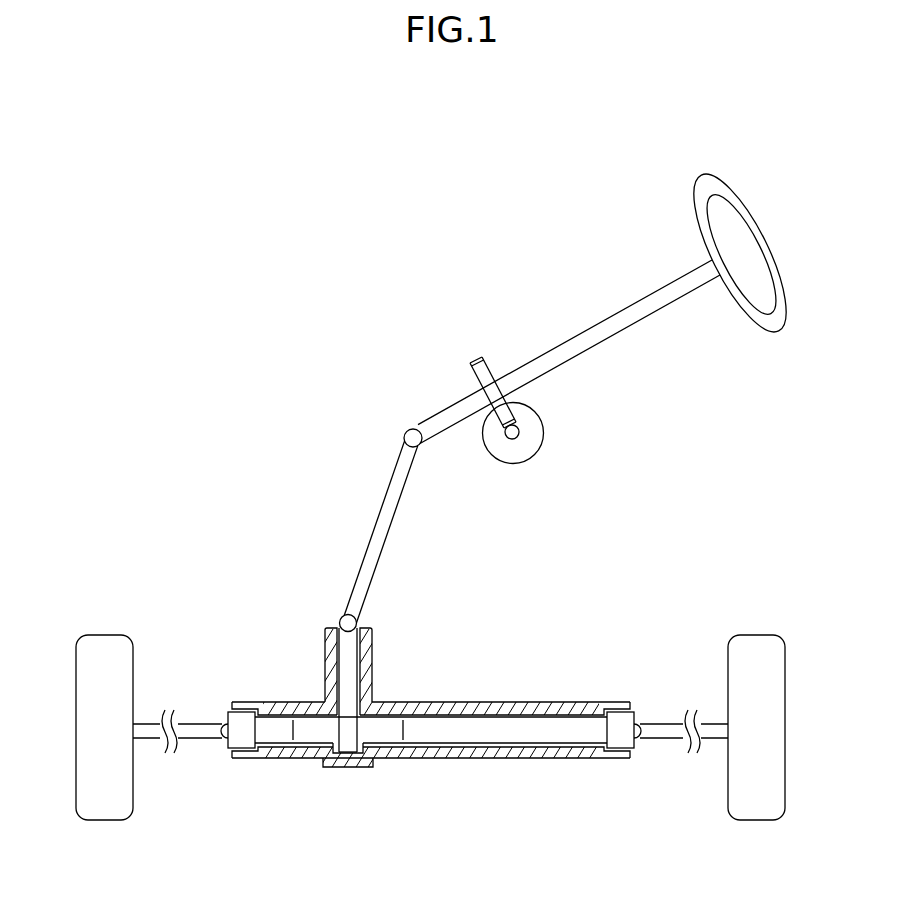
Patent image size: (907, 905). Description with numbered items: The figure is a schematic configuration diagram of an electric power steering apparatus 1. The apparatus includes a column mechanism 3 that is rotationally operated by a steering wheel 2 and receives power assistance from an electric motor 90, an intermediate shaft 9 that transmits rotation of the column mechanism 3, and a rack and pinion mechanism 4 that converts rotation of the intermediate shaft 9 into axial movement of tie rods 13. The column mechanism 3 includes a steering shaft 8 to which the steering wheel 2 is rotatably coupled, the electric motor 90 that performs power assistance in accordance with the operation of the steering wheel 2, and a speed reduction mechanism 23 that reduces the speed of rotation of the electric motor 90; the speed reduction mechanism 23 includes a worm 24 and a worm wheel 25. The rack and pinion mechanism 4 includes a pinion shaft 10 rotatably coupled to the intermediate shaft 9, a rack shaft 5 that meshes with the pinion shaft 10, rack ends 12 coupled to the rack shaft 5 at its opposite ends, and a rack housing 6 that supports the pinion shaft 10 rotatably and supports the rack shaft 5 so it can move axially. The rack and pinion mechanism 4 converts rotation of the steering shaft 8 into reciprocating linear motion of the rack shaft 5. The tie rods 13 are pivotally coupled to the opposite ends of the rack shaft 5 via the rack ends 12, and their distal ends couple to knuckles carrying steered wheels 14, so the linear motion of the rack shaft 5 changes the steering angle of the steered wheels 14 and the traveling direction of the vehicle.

The electric power steering apparatus 1 is at (605, 288).
The steering wheel 2 is at (788, 294).
The column mechanism 3 is at (549, 333).
The rack and pinion mechanism 4 is at (433, 771).
The rack shaft 5 is at (455, 727).
The rack housing 6 is at (533, 708).
The steering shaft 8 is at (443, 419).
The intermediate shaft 9 is at (378, 523).
The pinion shaft 10 is at (346, 647).
The rack end 12 is at (240, 720).
The tie rod 13 is at (198, 733).
The steered wheel 14 is at (102, 648).
The speed reduction mechanism 23 is at (531, 401).
The worm 24 is at (522, 428).
The worm wheel 25 is at (482, 368).
The electric motor 90 is at (518, 452).